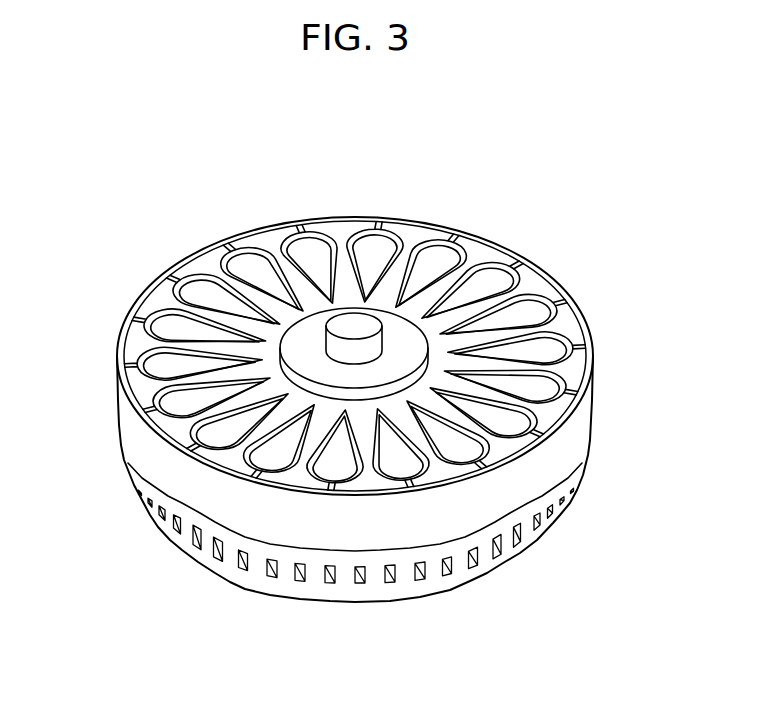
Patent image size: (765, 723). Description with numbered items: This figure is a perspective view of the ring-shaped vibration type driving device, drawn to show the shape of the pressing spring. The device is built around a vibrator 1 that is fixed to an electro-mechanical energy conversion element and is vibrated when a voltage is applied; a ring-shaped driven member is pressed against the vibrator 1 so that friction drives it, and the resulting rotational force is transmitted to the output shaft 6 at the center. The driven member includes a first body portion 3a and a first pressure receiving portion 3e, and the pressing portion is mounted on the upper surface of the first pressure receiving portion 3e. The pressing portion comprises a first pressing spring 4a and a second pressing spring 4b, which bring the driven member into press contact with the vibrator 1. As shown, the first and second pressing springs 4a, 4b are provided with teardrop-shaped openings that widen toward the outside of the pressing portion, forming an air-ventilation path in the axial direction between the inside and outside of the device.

The vibrator 1 is at (163, 535).
The first body portion 3a is at (540, 518).
The first pressure receiving portion 3e is at (567, 437).
The first pressing spring 4a is at (560, 327).
The second pressing spring 4b is at (168, 370).
The output shaft 6 is at (360, 328).